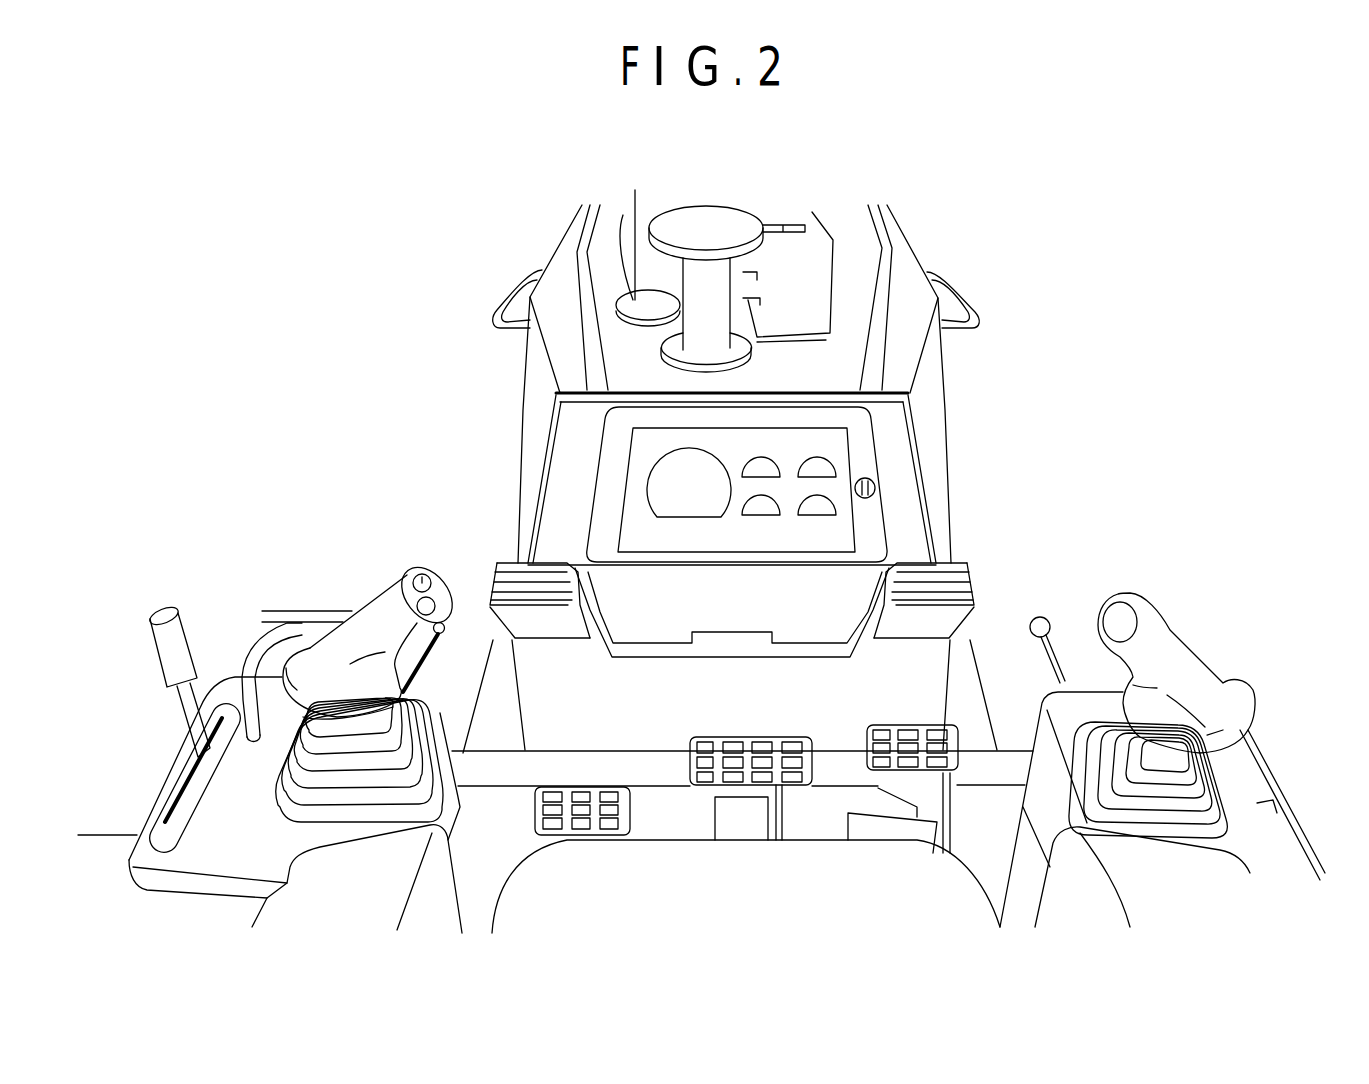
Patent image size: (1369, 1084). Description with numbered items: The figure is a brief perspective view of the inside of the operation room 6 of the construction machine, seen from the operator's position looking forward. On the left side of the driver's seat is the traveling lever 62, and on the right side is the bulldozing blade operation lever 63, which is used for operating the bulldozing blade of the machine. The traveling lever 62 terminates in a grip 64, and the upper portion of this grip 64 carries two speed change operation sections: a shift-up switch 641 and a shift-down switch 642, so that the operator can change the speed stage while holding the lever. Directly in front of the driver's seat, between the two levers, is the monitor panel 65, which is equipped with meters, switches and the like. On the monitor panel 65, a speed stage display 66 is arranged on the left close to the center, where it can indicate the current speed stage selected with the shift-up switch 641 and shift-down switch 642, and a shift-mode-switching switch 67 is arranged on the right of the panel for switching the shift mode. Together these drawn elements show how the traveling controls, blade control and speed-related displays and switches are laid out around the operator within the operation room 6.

The operation room 6 is at (312, 303).
The traveling lever 62 is at (273, 613).
The bulldozing blade operation lever 63 is at (1180, 657).
The grip 64 is at (370, 603).
The shift-up switch 641 is at (421, 574).
The shift-down switch 642 is at (443, 617).
The monitor panel 65 is at (592, 478).
The speed stage display 66 is at (665, 480).
The shift-mode-switching switch 67 is at (864, 480).